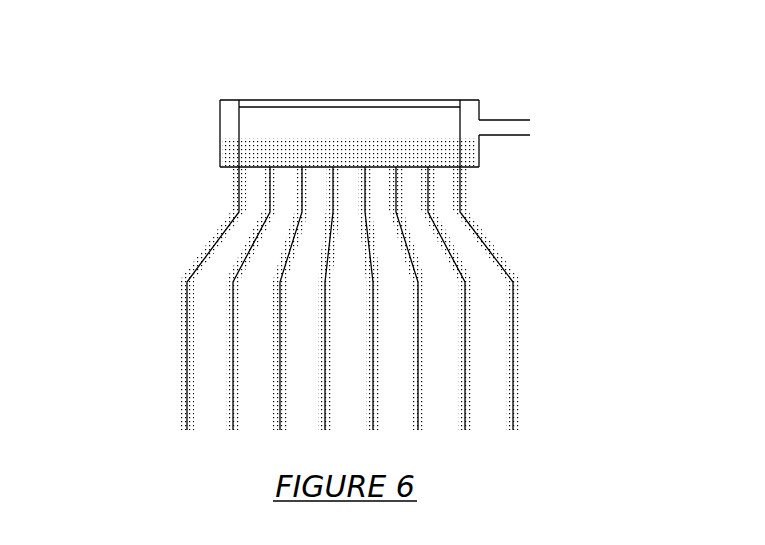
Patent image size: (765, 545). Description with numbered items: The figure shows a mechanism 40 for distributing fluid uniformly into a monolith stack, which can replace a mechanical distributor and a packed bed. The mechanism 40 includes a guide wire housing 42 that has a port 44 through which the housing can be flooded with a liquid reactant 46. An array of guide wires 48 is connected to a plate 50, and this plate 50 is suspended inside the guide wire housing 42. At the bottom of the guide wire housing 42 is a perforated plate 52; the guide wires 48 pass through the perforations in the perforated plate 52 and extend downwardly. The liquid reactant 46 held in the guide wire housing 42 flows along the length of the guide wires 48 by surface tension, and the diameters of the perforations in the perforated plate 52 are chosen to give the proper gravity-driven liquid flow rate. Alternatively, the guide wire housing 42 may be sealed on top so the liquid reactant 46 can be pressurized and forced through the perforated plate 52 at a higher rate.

The mechanism 40 is at (335, 226).
The guide wire housing 42 is at (232, 99).
The port 44 is at (530, 127).
The liquid reactant 46 is at (468, 160).
The guide wires 48 is at (234, 372).
The plate 50 is at (439, 105).
The perforated plate 52 is at (225, 169).